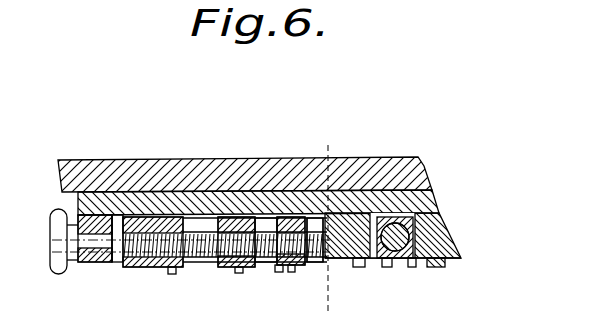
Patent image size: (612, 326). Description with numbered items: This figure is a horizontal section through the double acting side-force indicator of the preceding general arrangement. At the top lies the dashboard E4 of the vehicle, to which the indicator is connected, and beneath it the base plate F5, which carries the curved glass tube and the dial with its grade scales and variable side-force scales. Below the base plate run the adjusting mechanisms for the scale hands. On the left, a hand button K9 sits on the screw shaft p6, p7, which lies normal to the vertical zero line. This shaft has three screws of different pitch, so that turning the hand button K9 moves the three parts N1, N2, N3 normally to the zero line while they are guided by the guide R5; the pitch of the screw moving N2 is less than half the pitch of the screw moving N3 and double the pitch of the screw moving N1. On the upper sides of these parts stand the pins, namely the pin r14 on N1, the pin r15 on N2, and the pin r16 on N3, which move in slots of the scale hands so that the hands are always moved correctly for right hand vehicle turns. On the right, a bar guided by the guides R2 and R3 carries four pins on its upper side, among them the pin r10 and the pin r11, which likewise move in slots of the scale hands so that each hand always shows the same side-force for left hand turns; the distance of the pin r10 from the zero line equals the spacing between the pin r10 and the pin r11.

The dashboard E4 is at (344, 158).
The base plate F5 is at (386, 191).
The screw shaft p6 is at (92, 238).
The screw shaft p7 is at (322, 238).
The hand button K9 is at (57, 276).
The part carrying pins N3 is at (150, 267).
The pin r16 is at (172, 274).
The guide R5 is at (209, 262).
The pin r15 is at (240, 273).
The part carrying pin N2 is at (256, 264).
The pin r14 is at (300, 272).
The part carrying pin N1 is at (315, 262).
The guide R3 is at (338, 259).
The pin r10 is at (377, 282).
The pin r11 is at (388, 268).
The guide R2 is at (452, 257).